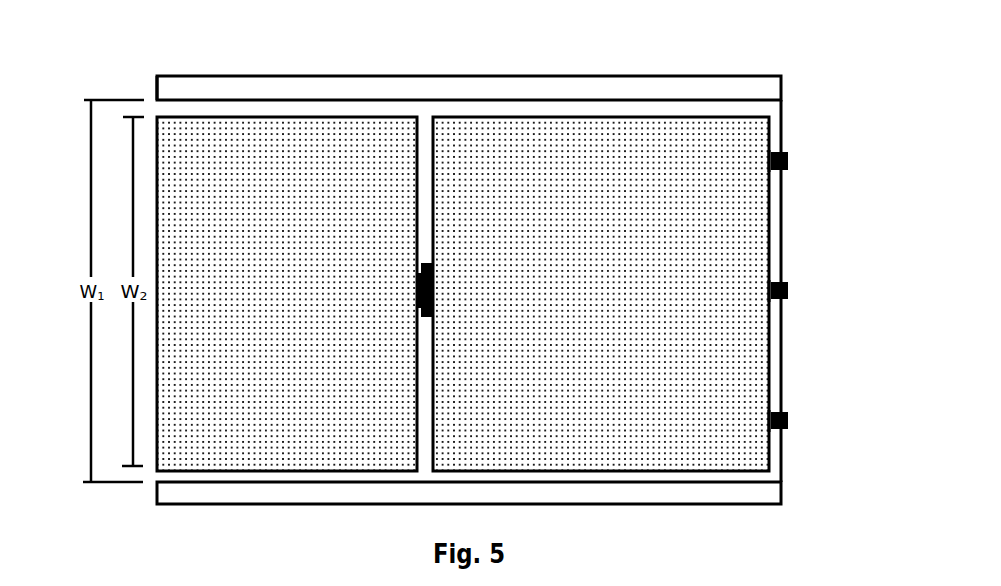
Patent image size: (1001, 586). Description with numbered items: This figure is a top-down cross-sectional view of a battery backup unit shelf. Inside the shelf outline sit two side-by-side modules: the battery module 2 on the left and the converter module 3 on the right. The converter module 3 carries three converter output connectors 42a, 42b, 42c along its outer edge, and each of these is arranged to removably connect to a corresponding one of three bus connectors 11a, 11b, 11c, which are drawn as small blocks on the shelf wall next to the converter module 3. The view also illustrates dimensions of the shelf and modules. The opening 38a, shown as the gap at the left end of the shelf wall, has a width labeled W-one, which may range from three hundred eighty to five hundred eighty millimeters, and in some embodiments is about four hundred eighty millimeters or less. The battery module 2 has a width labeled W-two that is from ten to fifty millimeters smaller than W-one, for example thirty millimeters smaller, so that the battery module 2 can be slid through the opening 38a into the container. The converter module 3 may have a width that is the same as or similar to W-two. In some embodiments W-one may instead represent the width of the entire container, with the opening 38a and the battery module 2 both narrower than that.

The opening 38a is at (120, 77).
The battery module 2 is at (293, 117).
The converter module 3 is at (630, 117).
The converter output connector 42a is at (766, 160).
The converter output connector 42b is at (766, 290).
The converter output connector 42c is at (766, 420).
The bus connector 11a is at (808, 144).
The bus connector 11b is at (818, 281).
The bus connector 11c is at (821, 412).